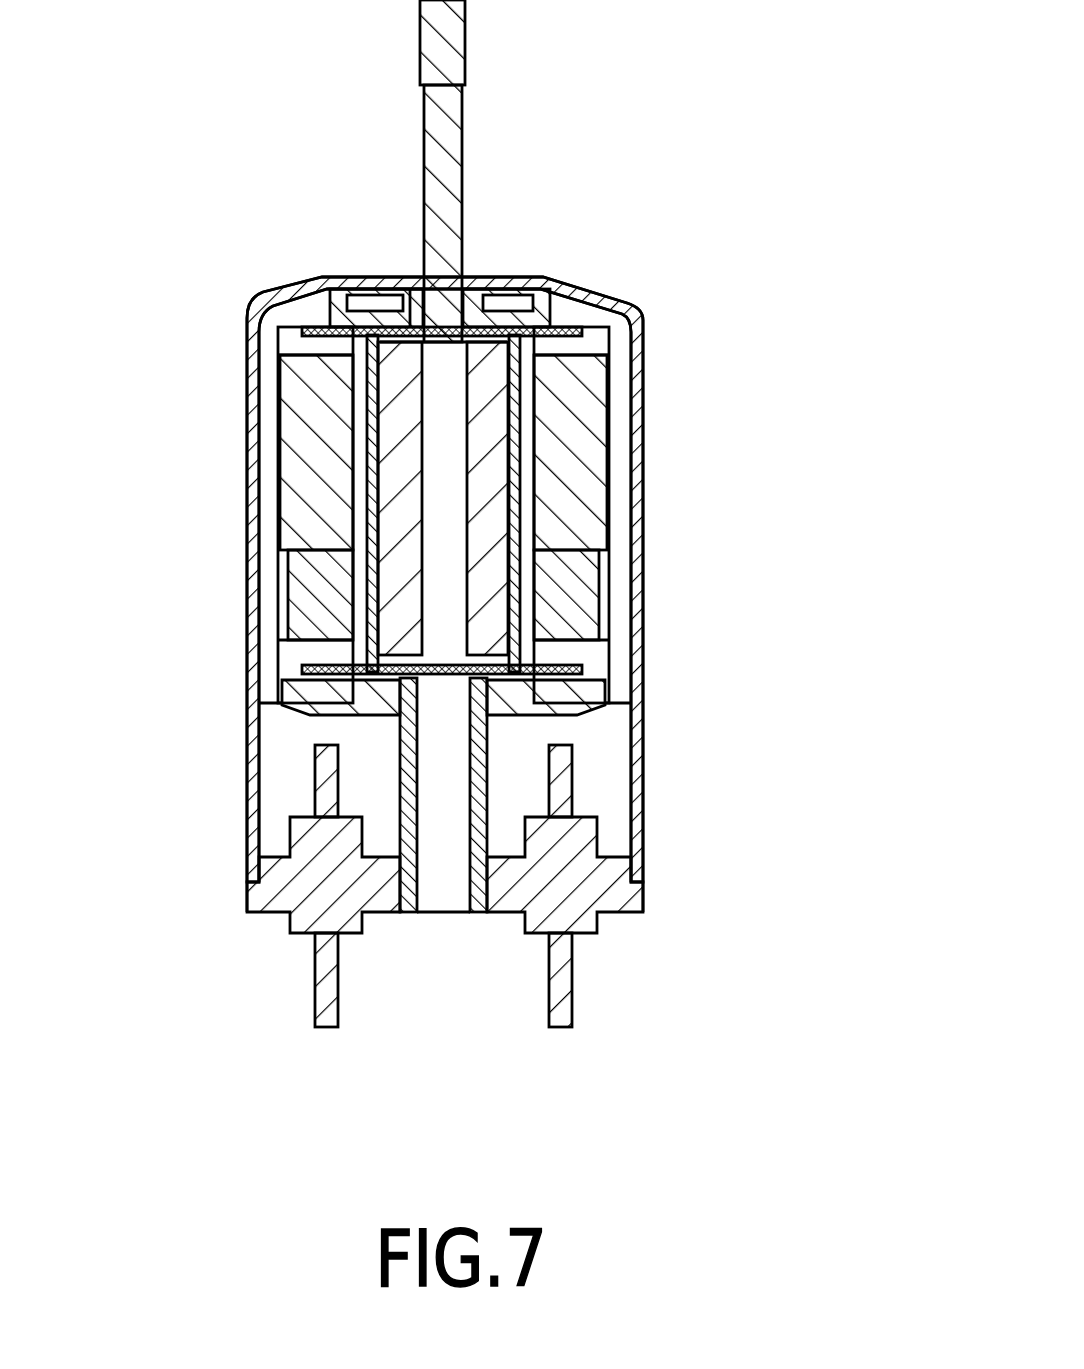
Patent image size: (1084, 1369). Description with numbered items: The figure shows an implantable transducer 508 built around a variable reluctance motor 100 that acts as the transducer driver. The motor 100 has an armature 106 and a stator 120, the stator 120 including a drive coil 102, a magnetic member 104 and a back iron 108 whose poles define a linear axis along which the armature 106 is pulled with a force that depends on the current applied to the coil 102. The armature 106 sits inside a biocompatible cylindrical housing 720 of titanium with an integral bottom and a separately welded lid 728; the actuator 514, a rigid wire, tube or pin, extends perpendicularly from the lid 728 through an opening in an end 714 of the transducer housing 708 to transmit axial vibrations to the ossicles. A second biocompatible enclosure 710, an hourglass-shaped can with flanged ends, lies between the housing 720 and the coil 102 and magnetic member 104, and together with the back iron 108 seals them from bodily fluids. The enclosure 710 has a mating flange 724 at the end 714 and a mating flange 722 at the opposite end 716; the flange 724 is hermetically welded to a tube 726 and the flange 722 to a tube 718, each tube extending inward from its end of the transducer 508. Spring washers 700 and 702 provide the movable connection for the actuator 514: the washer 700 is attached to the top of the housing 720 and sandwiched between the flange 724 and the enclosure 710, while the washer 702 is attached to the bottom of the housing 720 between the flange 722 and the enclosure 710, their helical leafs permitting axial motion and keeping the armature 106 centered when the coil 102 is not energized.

The motor 100 is at (519, 555).
The drive coil 102 is at (305, 608).
The magnetic member 104 is at (297, 384).
The armature 106 is at (397, 610).
The back iron 108 is at (638, 345).
The stator 120 is at (297, 482).
The transducer 508 is at (502, 555).
The actuator 514 is at (463, 130).
The spring washer 700 is at (342, 312).
The spring washer 702 is at (560, 652).
The transducer housing 708 is at (262, 322).
The biocompatible enclosure 710 is at (350, 443).
The end 714 is at (503, 217).
The end 716 is at (405, 912).
The tube 718 is at (490, 762).
The cylindrical housing 720 is at (512, 383).
The mating flange 722 is at (335, 682).
The mating flange 724 is at (348, 317).
The tube 726 is at (410, 283).
The lid 728 is at (492, 330).